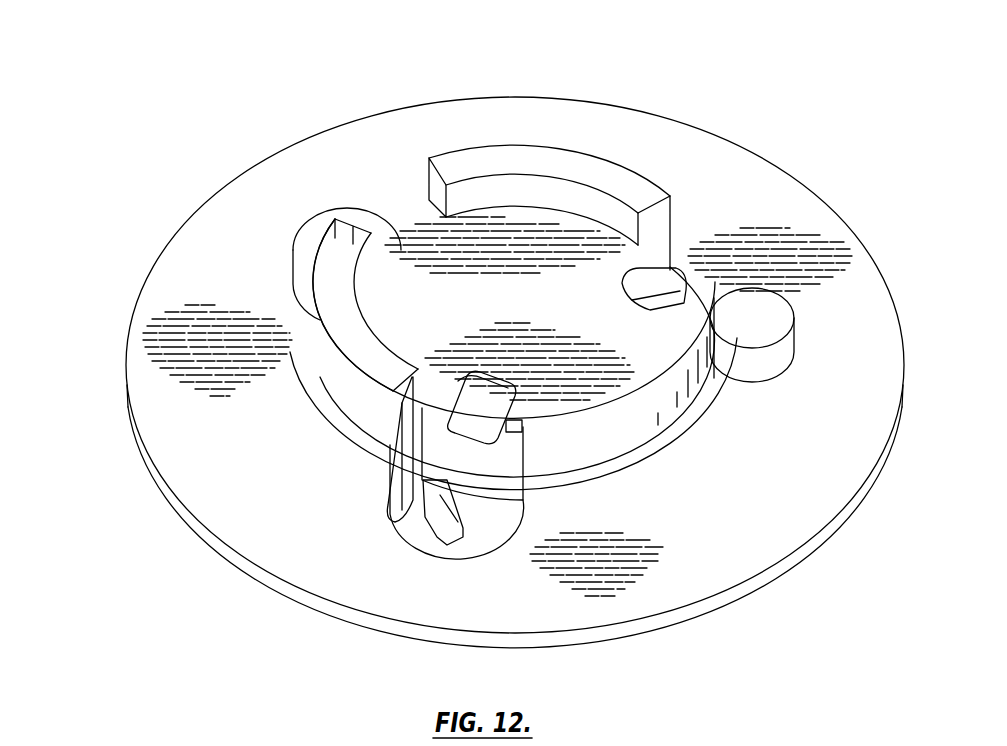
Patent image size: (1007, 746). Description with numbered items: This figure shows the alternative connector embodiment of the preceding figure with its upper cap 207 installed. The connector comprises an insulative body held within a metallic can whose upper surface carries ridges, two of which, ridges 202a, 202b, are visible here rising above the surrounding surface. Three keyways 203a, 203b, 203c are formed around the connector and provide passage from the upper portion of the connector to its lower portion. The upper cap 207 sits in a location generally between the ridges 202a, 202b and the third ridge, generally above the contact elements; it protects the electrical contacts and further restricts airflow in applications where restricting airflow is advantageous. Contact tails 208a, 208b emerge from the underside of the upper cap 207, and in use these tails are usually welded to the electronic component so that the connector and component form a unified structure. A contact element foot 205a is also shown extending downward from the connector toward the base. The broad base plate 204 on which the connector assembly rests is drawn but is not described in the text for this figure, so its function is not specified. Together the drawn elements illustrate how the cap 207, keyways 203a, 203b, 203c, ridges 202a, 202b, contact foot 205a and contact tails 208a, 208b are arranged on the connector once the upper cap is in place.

The ridge 202a is at (551, 158).
The ridge 202b is at (333, 300).
The keyway 203a is at (748, 333).
The keyway 203b is at (366, 218).
The keyway 203c is at (485, 522).
The base plate 204 is at (263, 533).
The contact element foot 205a is at (441, 532).
The upper cap 207 is at (556, 277).
The contact tail 208a is at (522, 418).
The contact tail 208b is at (658, 282).